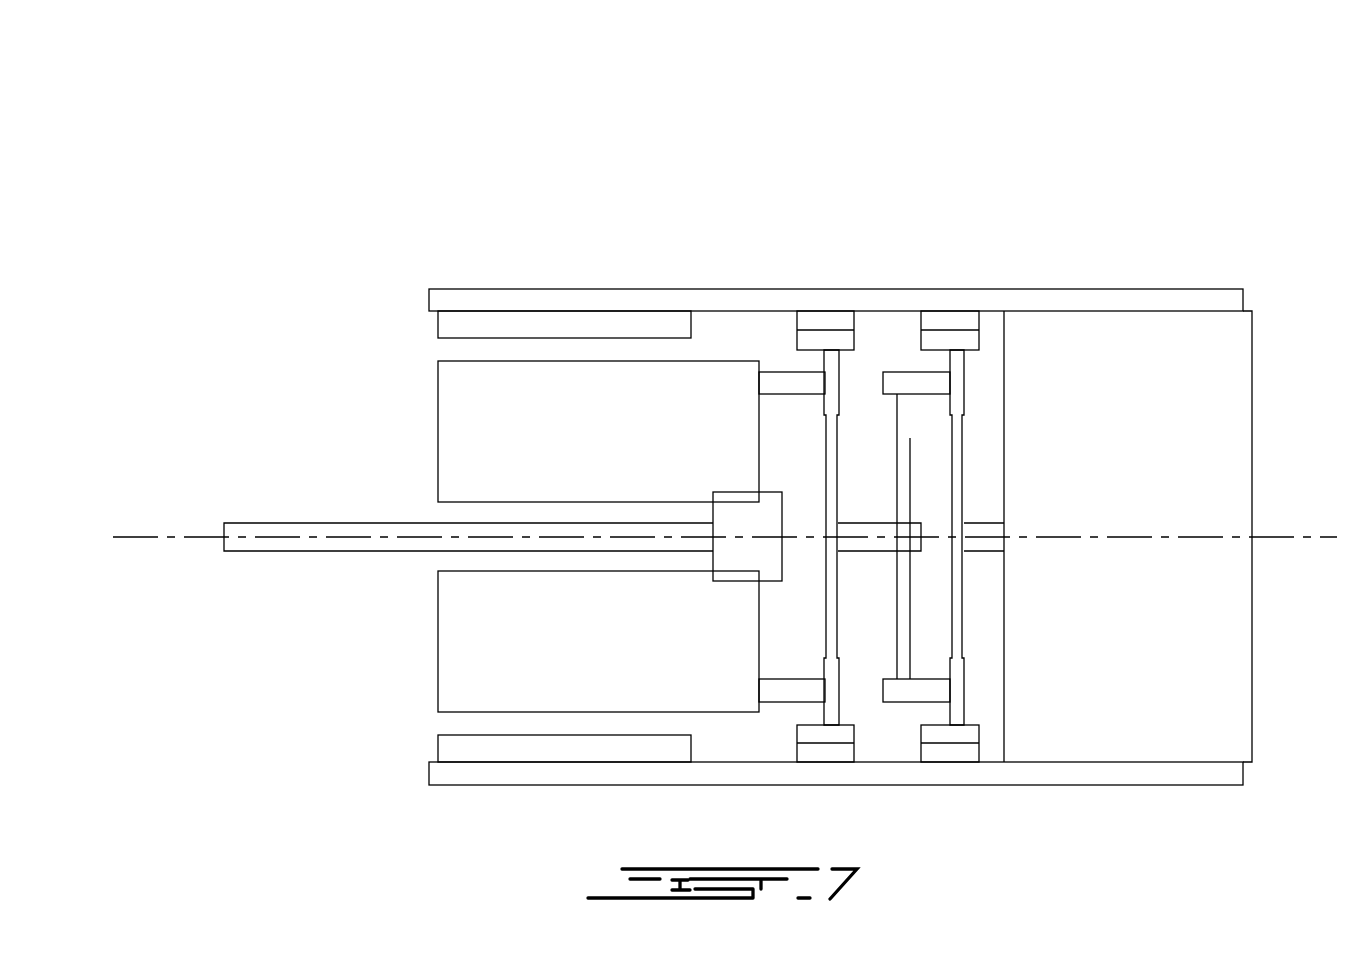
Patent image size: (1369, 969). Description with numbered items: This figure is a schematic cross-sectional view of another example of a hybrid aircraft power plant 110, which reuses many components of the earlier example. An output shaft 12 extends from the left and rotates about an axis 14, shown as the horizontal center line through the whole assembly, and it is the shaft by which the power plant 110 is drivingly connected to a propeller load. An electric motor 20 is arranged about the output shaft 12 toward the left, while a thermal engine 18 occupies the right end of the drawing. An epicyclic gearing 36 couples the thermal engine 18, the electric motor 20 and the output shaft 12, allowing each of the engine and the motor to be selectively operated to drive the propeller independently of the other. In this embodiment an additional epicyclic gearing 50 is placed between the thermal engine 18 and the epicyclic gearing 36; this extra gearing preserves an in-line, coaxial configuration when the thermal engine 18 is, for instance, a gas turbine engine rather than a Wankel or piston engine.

The power plant 110 is at (340, 153).
The output shaft 12 is at (310, 530).
The axis 14 is at (1295, 537).
The thermal engine 18 is at (1252, 387).
The electric motor 20 is at (437, 380).
The epicyclic gearing 36 is at (883, 275).
The additional epicyclic gearing 50 is at (978, 275).